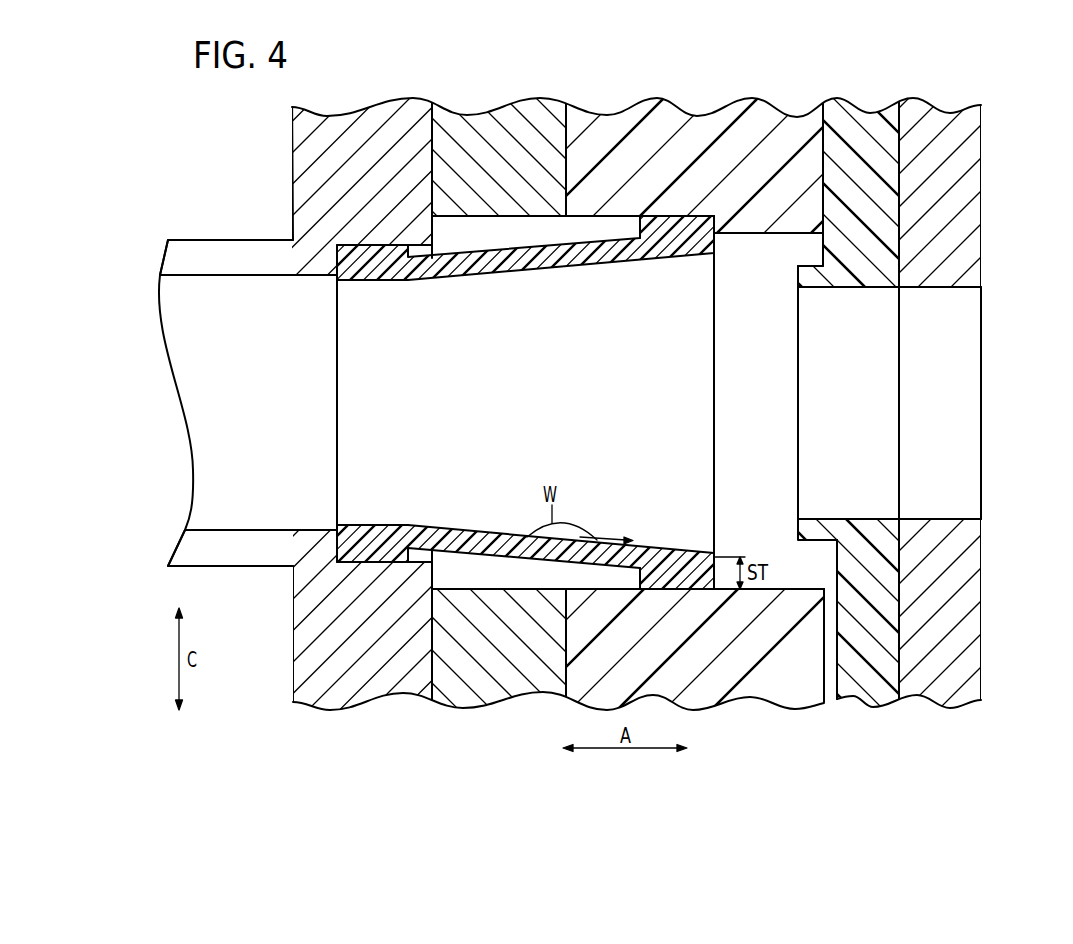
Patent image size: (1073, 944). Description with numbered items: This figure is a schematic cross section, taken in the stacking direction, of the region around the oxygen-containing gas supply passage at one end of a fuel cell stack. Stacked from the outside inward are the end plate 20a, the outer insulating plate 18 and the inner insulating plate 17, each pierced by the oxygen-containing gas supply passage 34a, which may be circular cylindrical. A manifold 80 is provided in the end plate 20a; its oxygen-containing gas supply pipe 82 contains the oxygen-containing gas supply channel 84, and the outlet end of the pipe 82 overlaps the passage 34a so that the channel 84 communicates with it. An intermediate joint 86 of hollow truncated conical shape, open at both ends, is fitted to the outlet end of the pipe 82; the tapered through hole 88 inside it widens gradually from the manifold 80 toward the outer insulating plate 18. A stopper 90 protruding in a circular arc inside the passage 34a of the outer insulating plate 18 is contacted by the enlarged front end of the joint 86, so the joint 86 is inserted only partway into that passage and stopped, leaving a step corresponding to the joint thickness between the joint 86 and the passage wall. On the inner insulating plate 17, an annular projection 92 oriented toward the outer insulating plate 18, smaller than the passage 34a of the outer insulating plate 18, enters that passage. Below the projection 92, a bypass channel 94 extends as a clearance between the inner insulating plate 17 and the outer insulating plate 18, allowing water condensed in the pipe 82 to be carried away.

The inner insulating plate 17 is at (863, 118).
The outer insulating plate 18 is at (640, 112).
The end plate 20a is at (503, 112).
The oxygen-containing gas supply passage 34a is at (855, 290).
The manifold 80 is at (352, 104).
The oxygen-containing gas supply pipe 82 is at (220, 250).
The oxygen-containing gas supply channel 84 is at (254, 278).
The intermediate joint 86 is at (515, 266).
The tapered through hole 88 is at (630, 262).
The stopper 90 is at (748, 226).
The annular projection 92 is at (801, 278).
The bypass channel 94 is at (830, 626).